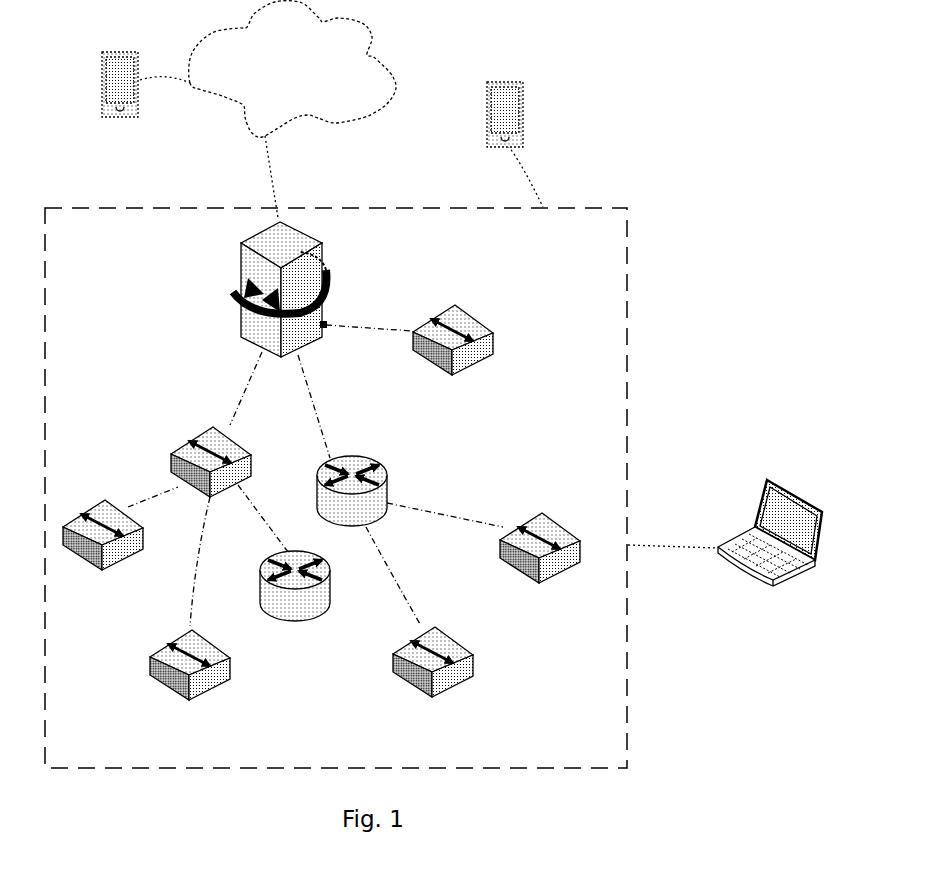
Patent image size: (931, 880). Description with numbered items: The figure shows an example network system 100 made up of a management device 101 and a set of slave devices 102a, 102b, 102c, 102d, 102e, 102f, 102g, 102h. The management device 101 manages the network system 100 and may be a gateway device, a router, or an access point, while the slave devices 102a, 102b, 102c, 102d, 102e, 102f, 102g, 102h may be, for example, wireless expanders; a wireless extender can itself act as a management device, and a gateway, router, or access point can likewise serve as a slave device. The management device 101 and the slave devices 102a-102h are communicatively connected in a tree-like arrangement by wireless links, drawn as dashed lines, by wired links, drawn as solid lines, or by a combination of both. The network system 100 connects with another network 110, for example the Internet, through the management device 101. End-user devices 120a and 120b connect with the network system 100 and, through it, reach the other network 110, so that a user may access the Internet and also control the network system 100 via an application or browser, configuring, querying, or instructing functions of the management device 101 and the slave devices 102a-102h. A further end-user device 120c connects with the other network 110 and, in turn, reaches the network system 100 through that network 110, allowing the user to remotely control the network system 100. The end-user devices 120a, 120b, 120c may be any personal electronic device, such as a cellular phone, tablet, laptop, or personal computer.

The network system 100 is at (628, 355).
The management device 101 is at (263, 289).
The slave device 102a is at (466, 335).
The slave device 102b is at (201, 450).
The slave device 102c is at (354, 474).
The slave device 102d is at (103, 550).
The slave device 102e is at (167, 665).
The slave device 102f is at (295, 605).
The slave device 102g is at (426, 668).
The slave device 102h is at (540, 558).
The another network 110 is at (292, 69).
The end-user device 120a is at (532, 114).
The end-user device 120b is at (759, 539).
The end-user device 120c is at (120, 66).